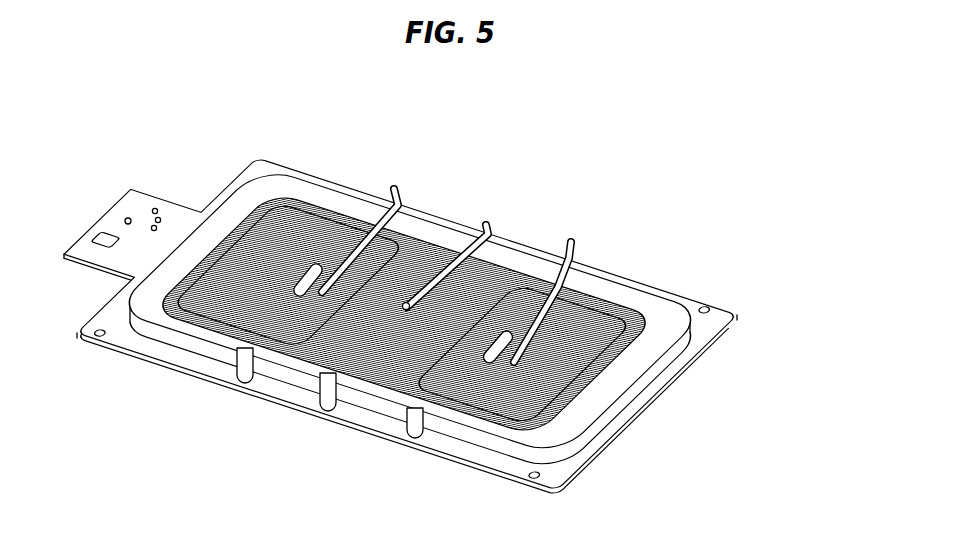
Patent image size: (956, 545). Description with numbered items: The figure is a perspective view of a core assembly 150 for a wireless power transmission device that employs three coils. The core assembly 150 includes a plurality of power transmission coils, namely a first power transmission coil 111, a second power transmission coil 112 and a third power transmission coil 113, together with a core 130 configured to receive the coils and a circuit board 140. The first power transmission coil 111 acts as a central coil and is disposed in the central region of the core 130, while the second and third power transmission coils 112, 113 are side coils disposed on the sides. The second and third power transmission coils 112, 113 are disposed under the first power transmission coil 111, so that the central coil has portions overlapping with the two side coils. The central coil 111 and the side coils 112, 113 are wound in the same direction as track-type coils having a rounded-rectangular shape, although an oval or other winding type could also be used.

The core assembly 150 is at (586, 133).
The circuit board 140 is at (651, 389).
The core 130 is at (581, 414).
The first power transmission coil 111 is at (429, 226).
The second power transmission coil 112 is at (259, 204).
The third power transmission coil 113 is at (618, 289).